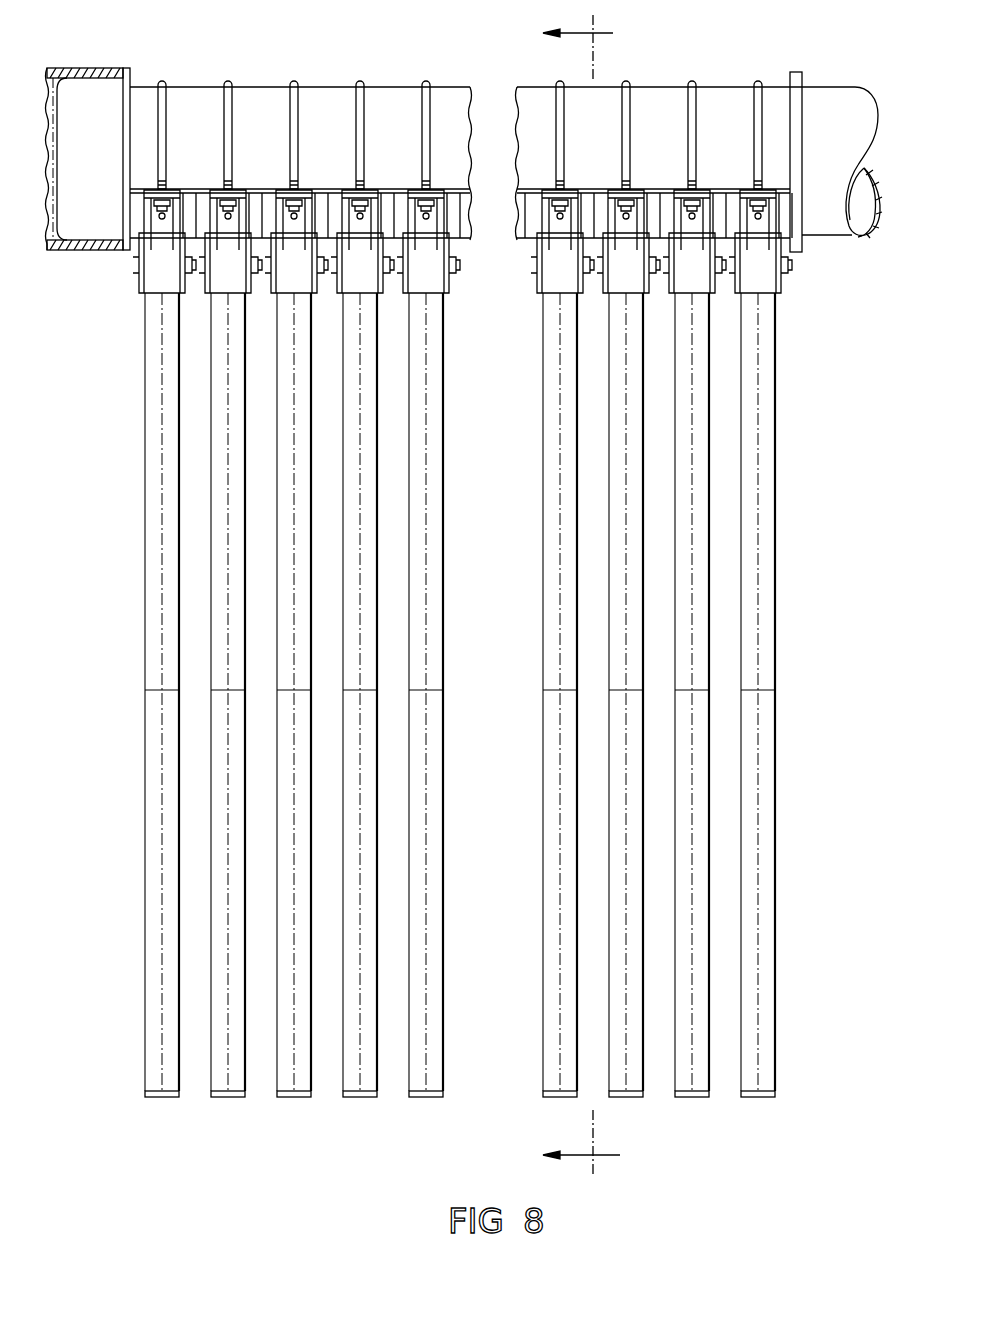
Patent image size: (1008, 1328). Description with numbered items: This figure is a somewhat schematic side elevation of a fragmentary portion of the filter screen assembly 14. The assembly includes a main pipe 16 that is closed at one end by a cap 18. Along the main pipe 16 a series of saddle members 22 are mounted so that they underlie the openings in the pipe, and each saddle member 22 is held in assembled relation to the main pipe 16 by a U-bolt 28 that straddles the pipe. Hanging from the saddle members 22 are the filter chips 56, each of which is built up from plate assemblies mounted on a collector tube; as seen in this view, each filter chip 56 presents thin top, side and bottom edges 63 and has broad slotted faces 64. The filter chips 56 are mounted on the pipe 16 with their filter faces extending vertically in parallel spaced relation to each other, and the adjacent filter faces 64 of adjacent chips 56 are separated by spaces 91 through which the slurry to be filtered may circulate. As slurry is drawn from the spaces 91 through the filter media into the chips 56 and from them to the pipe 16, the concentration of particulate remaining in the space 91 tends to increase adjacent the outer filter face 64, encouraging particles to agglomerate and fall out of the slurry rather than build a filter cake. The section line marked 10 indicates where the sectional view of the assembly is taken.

The section line 10- 10 is at (584, 596).
The filter screen assembly 14 is at (815, 364).
The main pipe 16 is at (662, 105).
The cap 18 is at (99, 146).
The saddle member 22 is at (538, 244).
The U-bolt 28 is at (757, 80).
The filter chip 56 is at (552, 985).
The edges 63 is at (432, 290).
The slotted faces 64 is at (782, 292).
The spaces 91 is at (392, 1092).